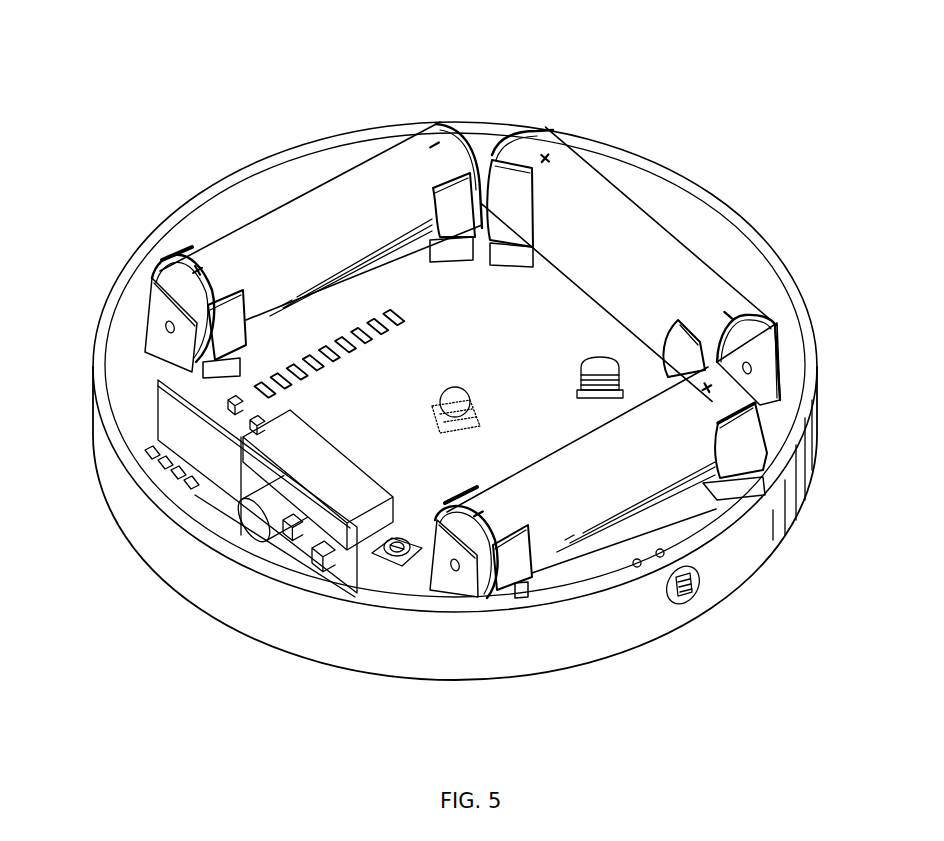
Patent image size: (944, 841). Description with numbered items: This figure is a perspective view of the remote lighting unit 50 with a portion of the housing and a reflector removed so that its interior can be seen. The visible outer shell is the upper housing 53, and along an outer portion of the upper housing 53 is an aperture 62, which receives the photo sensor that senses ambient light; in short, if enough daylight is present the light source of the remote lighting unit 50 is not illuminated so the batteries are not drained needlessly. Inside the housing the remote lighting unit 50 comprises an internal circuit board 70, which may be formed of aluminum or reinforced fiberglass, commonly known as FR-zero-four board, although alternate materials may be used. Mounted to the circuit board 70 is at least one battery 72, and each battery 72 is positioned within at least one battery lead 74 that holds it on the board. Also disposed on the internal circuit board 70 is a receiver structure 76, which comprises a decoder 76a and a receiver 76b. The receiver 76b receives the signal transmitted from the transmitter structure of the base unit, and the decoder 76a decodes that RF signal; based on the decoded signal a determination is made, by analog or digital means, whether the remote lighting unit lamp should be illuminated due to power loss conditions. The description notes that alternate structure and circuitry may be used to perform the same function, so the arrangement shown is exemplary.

The remote lighting unit 50 is at (800, 100).
The upper housing 53 is at (237, 607).
The aperture 62 is at (700, 583).
The internal circuit board 70 is at (541, 298).
The battery 72 is at (272, 222).
The battery lead 74 is at (507, 157).
The receiver structure 76 is at (203, 497).
The decoder 76a is at (173, 427).
The receiver 76b is at (323, 460).